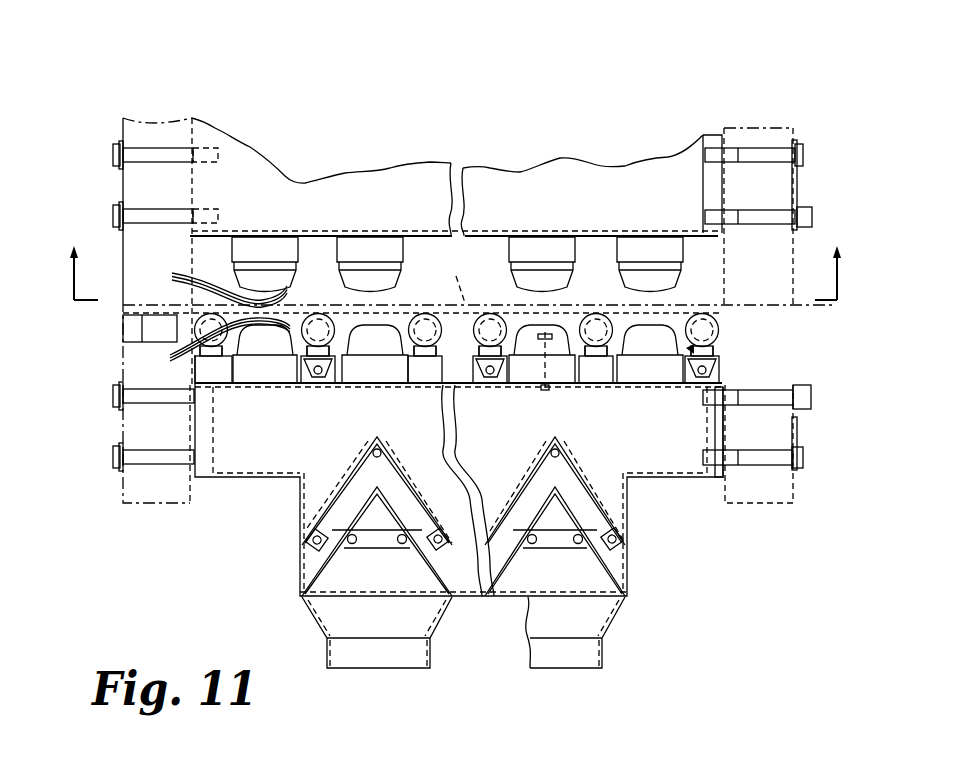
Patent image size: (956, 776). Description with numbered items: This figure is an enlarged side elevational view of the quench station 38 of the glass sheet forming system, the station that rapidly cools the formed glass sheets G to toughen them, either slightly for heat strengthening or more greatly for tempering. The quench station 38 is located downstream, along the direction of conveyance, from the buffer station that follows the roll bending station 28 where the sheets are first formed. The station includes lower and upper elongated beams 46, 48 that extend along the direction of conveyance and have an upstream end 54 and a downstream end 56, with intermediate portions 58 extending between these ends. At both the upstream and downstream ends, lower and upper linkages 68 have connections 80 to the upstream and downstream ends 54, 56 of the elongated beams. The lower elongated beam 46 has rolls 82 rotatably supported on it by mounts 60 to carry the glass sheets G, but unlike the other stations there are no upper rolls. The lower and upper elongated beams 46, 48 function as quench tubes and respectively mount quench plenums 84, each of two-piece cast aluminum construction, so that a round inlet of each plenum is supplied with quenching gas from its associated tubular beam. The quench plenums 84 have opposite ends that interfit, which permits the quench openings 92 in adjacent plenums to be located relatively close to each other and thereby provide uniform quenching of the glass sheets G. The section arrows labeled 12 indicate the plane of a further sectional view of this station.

The quench station 38 is at (479, 337).
The upper elongated beam 48 is at (396, 165).
The intermediate portion 58 is at (476, 188).
The lower elongated beam 46 is at (278, 462).
The upstream end 54 is at (215, 133).
The downstream end 56 is at (706, 134).
The lower and upper linkages 68 is at (778, 124).
The connections 80 is at (150, 207).
The quench plenum 84 is at (257, 243).
The rolls 82 is at (414, 313).
The quench openings 92 is at (216, 320).
The glass sheets G is at (458, 277).
The mounts 60 is at (216, 350).
The roll bending station 28 is at (694, 350).
The section line 12- 12 is at (453, 284).